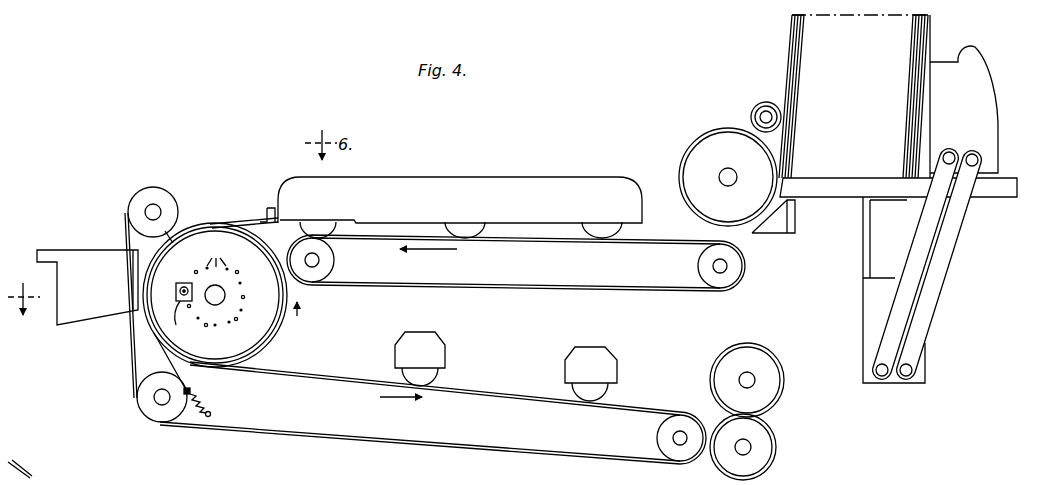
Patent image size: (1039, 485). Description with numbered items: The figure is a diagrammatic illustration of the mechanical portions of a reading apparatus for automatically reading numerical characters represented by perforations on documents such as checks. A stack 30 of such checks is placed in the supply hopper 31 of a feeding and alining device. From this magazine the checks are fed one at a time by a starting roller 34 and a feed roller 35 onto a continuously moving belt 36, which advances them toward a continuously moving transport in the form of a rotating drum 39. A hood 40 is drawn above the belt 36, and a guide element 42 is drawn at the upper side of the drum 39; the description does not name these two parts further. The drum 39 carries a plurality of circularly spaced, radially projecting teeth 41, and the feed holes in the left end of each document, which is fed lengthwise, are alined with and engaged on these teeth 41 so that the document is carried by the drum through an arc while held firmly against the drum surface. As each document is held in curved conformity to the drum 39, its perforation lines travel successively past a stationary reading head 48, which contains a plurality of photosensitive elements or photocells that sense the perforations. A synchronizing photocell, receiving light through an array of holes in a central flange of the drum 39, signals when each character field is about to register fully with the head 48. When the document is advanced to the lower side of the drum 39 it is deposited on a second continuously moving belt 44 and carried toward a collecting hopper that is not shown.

The stack 30 is at (790, 40).
The supply hopper 31 is at (847, 182).
The starting roller 34 is at (753, 107).
The feed roller 35 is at (701, 140).
The belt 36 is at (512, 245).
The drum 39 is at (292, 326).
The hood 40 is at (259, 220).
The teeth 41 is at (254, 358).
The guide plate 42 is at (196, 226).
The second belt 44 is at (458, 392).
The reading head 48 is at (93, 312).